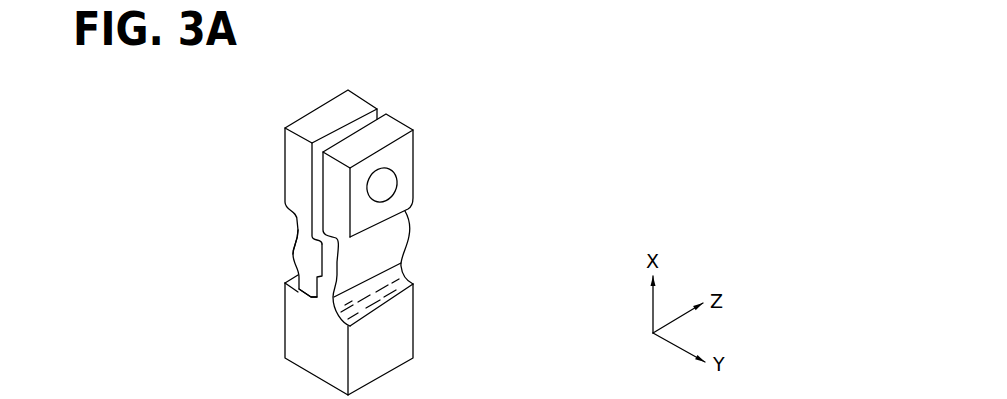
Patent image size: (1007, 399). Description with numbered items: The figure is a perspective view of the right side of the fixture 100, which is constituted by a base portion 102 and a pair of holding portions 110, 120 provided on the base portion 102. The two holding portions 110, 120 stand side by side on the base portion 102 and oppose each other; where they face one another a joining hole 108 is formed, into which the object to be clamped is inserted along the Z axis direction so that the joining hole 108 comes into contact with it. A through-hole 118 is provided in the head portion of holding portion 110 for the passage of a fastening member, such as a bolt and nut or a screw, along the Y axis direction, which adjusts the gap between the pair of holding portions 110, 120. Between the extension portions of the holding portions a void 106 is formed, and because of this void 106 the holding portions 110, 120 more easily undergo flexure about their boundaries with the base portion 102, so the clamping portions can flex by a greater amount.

The fixture 100 is at (625, 46).
The base portion 102 is at (398, 342).
The void 106 is at (314, 292).
The joining hole 108 is at (318, 256).
The holding portion 110 is at (405, 192).
The through-hole 118 is at (388, 185).
The holding portion 120 is at (287, 187).